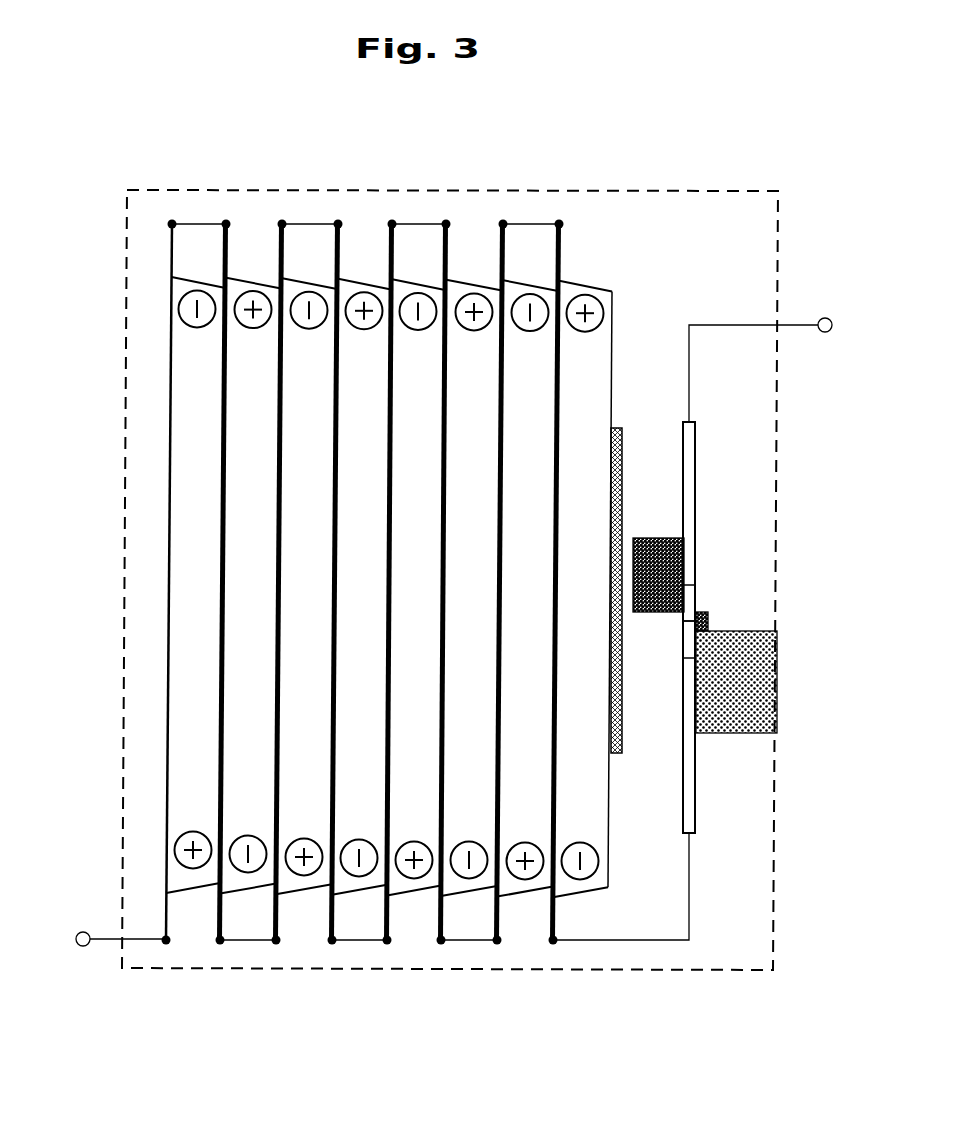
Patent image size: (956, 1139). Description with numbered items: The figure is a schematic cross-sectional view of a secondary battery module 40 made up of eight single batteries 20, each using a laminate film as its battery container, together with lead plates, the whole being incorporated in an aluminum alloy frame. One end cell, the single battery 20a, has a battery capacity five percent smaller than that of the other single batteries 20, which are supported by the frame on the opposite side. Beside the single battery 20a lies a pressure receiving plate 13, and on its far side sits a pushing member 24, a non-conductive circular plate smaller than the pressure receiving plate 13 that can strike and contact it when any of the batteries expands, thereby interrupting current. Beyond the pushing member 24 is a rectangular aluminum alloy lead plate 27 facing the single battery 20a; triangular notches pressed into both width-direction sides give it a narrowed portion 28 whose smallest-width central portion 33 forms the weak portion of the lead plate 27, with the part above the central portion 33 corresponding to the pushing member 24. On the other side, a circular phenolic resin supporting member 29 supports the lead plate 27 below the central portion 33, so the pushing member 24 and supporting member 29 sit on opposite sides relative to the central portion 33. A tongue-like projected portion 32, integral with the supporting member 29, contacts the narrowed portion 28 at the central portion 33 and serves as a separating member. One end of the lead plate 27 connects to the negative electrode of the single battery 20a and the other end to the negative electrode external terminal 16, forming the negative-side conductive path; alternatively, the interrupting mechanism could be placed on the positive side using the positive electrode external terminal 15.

The secondary battery module 40 is at (375, 182).
The single battery 20 is at (192, 392).
The single battery 20a is at (578, 390).
The pressure receiving plate 13 is at (617, 428).
The pushing member 24 is at (645, 537).
The lead plate 27 is at (687, 788).
The narrowed portion 28 is at (695, 595).
The projected portion 32 is at (707, 615).
The supporting member 29 is at (740, 703).
The central portion 33 is at (681, 622).
The positive electrode external terminal 15 is at (119, 922).
The negative electrode external terminal 16 is at (762, 354).